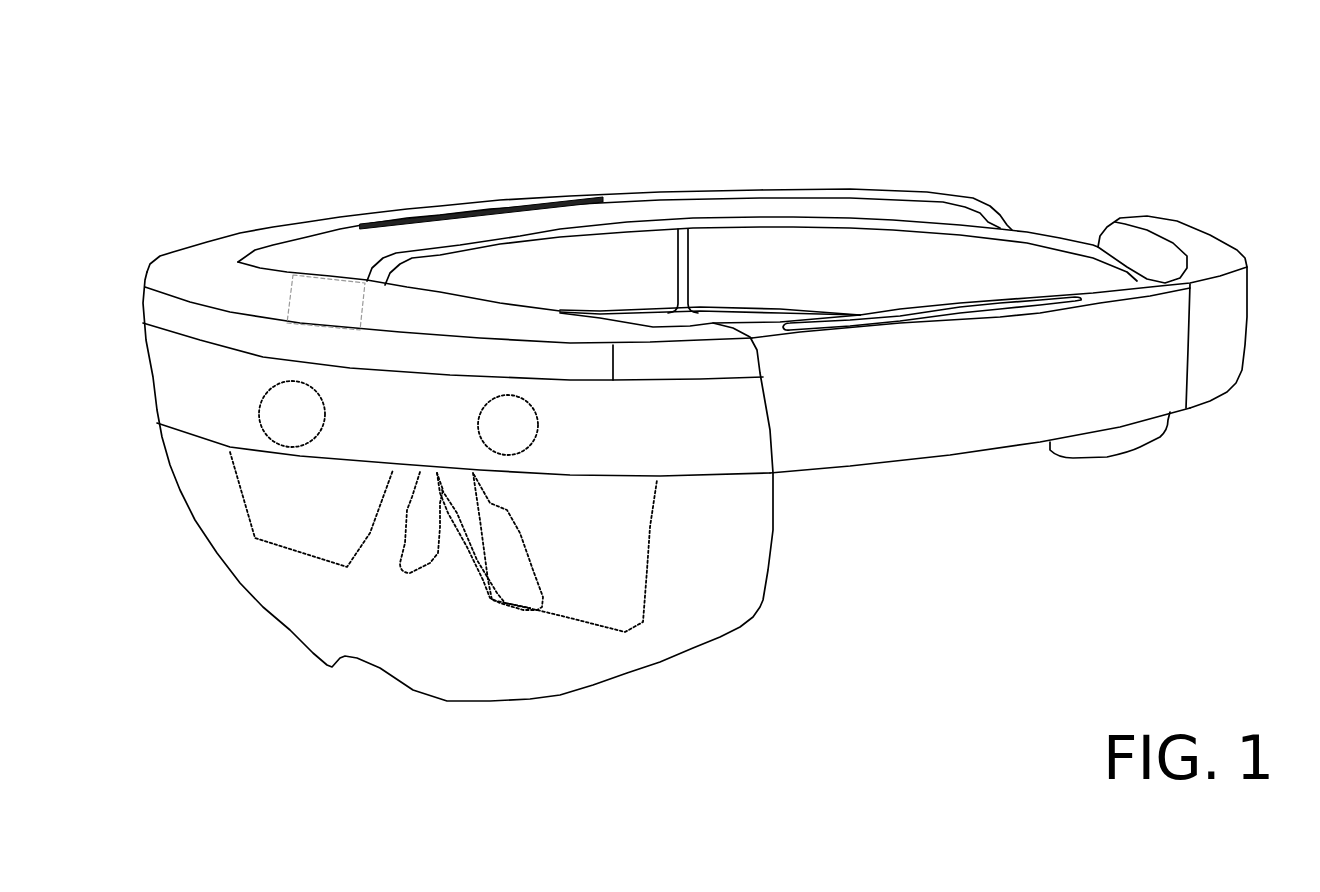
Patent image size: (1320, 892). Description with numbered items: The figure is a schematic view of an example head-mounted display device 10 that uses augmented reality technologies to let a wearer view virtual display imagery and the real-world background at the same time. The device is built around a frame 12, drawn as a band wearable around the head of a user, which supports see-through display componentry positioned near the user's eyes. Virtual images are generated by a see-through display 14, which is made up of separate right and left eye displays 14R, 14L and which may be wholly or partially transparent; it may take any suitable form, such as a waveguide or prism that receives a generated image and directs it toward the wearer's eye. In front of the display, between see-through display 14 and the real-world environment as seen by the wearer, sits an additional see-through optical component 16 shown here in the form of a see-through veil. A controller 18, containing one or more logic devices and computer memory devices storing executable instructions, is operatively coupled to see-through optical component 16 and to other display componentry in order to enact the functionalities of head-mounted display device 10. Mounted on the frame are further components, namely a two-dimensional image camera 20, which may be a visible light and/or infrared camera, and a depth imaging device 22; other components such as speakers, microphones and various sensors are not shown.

The head-mounted display device 10 is at (1143, 133).
The frame 12 is at (994, 394).
The see-through display 14 is at (477, 542).
The left eye display 14L is at (579, 615).
The right eye display 14R is at (308, 545).
The see-through optical component 16 is at (762, 602).
The controller 18 is at (311, 309).
The two-dimensional image camera 20 is at (494, 437).
The depth imaging device 22 is at (278, 425).